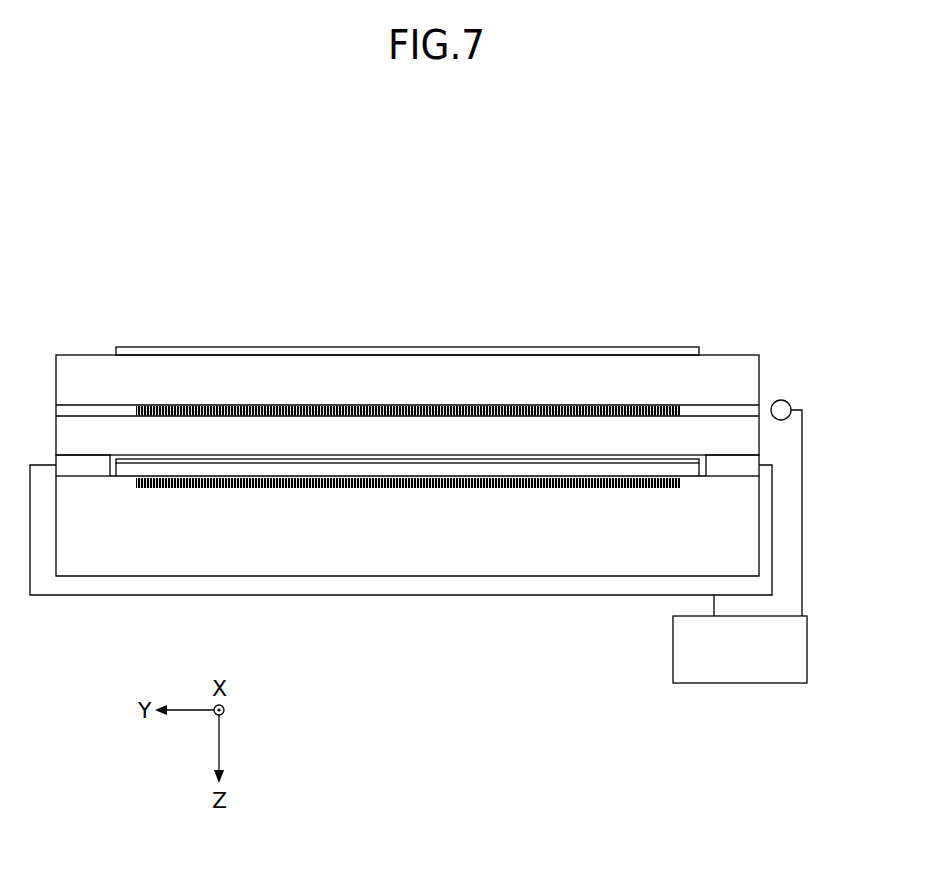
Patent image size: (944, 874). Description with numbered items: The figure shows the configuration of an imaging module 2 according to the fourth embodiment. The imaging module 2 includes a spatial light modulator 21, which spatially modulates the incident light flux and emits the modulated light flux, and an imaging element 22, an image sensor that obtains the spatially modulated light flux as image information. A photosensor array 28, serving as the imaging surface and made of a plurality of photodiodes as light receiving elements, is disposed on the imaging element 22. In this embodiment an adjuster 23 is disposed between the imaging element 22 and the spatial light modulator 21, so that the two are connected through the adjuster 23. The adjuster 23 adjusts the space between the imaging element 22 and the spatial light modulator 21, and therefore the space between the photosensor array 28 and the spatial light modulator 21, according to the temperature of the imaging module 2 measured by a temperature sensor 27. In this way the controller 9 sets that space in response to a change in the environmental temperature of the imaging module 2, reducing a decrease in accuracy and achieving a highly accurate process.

The imaging module 2 is at (663, 309).
The spatial light modulator 21 is at (88, 355).
The imaging element 22 is at (138, 540).
The adjuster 23 is at (92, 476).
The temperature sensor 27 is at (782, 399).
The photosensor array 28 is at (678, 472).
The controller 9 is at (673, 652).